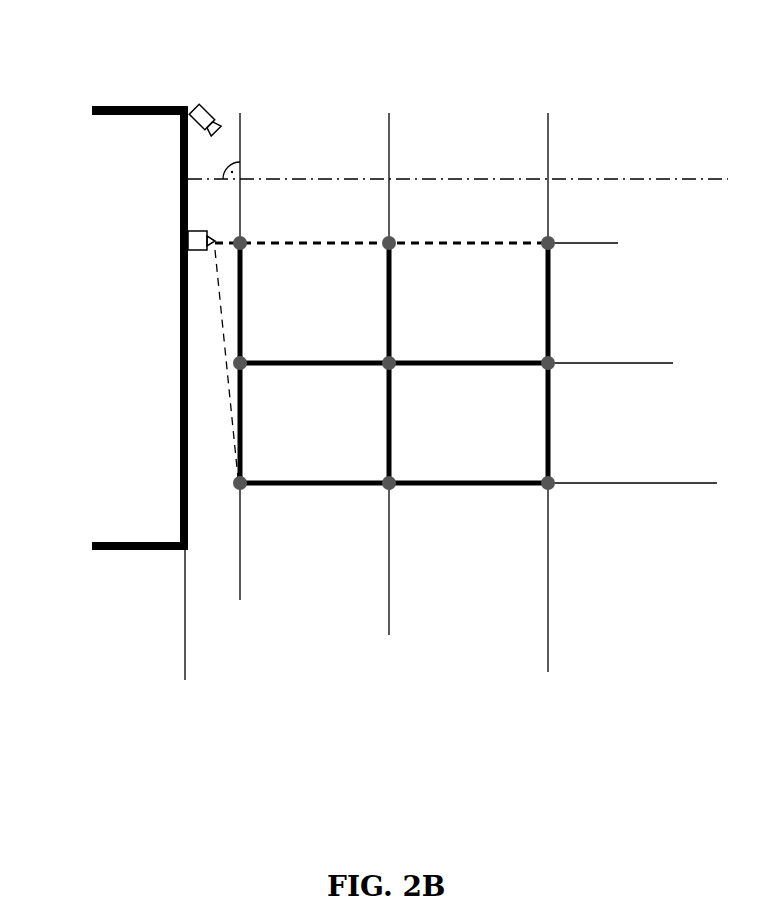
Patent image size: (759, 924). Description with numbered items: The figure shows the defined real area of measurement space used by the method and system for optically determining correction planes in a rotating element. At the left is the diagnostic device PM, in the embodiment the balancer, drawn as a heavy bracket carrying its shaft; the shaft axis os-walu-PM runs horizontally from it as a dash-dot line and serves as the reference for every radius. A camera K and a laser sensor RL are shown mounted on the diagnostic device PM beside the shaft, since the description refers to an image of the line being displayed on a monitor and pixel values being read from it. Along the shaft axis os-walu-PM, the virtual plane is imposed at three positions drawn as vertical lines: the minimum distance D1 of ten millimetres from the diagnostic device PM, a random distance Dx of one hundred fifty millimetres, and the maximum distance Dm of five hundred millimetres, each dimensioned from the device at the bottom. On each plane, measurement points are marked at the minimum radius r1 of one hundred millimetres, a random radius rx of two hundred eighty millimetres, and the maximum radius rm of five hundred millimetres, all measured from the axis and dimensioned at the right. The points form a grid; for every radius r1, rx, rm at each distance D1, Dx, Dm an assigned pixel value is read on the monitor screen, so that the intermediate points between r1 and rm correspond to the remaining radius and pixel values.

The camera K is at (195, 105).
The diagnostic device PM is at (68, 102).
The laser distance sensor RL is at (188, 230).
The minimum distance D1 is at (185, 586).
The random distance Dx is at (185, 622).
The maximum distance Dm is at (185, 660).
The minimum value of radius r1 is at (610, 179).
The random value of radius rx is at (657, 179).
The maximum radius value rm is at (699, 179).
The axis of the shaft of the diagnostic device os-walu-PM is at (585, 178).